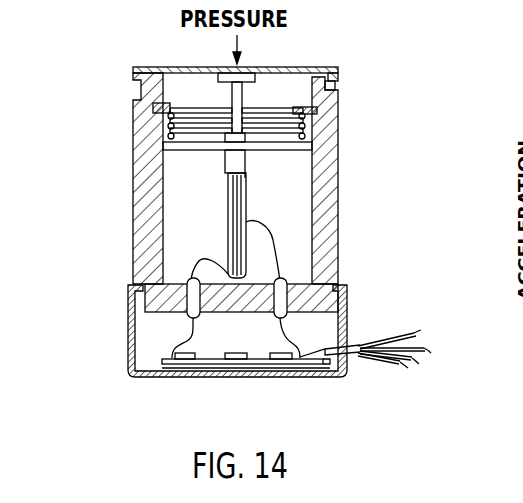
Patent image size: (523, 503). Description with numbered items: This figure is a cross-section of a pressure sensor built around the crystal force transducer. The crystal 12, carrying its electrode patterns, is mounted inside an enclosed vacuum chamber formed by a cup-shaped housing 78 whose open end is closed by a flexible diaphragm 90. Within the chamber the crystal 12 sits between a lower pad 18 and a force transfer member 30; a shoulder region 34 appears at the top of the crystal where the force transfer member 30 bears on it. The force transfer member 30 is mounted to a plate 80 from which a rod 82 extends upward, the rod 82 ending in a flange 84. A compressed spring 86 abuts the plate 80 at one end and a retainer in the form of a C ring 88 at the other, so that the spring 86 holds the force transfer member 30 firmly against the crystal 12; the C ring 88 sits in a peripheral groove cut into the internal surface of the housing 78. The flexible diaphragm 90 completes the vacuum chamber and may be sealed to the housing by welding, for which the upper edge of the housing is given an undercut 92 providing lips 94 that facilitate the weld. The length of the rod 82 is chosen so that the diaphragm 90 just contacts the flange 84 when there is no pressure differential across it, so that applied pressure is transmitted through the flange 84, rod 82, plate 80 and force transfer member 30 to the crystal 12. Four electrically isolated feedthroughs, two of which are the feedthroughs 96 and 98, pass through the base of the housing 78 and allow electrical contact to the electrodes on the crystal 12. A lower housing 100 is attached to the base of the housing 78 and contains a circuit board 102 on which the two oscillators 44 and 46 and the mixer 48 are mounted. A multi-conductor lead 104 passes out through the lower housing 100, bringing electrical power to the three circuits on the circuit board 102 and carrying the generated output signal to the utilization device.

The crystal 12 is at (228, 207).
The lower pad 18 is at (235, 252).
The force transfer member 30 is at (226, 167).
The shoulder 34 is at (247, 173).
The oscillator 44 is at (196, 353).
The oscillator 46 is at (284, 353).
The mixer 48 is at (232, 348).
The housing 78 is at (333, 205).
The plate 80 is at (273, 151).
The rod 82 is at (231, 90).
The flange 84 is at (254, 84).
The spring 86 is at (302, 128).
The C ring 88 is at (160, 101).
The flexible diaphragm 90 is at (283, 67).
The undercut 92 is at (335, 90).
The lips 94 is at (335, 80).
The feedthrough 96 is at (189, 317).
The feedthrough 98 is at (287, 320).
The lower housing 100 is at (128, 346).
The circuit board 102 is at (217, 377).
The multi-conductor lead 104 is at (375, 346).